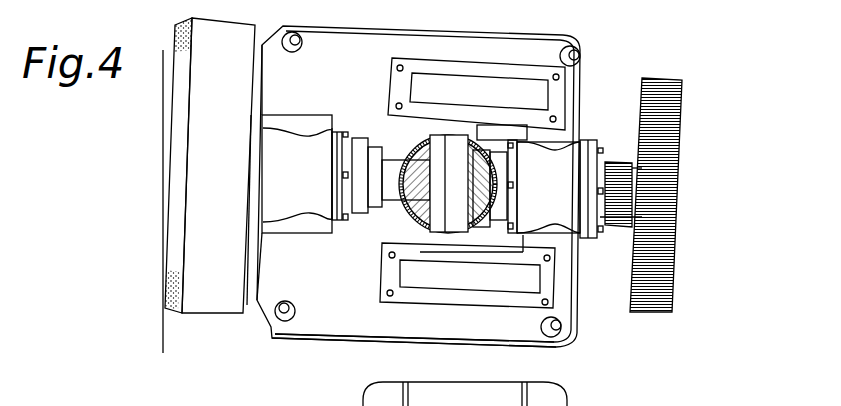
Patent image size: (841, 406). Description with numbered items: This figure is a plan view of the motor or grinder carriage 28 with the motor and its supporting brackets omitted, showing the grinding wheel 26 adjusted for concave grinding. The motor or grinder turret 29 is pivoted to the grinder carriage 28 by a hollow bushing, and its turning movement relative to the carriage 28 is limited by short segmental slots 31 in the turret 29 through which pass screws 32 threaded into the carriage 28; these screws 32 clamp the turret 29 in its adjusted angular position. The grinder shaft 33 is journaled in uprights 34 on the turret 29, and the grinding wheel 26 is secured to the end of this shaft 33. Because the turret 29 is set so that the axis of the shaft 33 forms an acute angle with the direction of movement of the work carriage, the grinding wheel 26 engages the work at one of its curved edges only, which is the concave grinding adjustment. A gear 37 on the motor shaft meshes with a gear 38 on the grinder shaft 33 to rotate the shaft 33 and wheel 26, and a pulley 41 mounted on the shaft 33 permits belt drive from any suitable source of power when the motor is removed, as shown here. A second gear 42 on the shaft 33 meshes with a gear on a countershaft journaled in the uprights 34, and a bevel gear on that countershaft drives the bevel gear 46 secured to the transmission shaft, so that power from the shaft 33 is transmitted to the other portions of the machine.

The grinding wheel 26 is at (180, 127).
The grinder carriage 28 is at (270, 340).
The motor or grinder turret 29 is at (352, 323).
The segmental slots 31 is at (297, 36).
The screws 32 is at (284, 36).
The grinder shaft 33 is at (398, 190).
The uprights 34 is at (307, 198).
The gear on the motor shaft 37 is at (660, 405).
The gear on the grinder shaft 38 is at (660, 217).
The pulley 41 is at (440, 150).
The second gear 42 is at (617, 223).
The bevel gear 46 is at (421, 218).